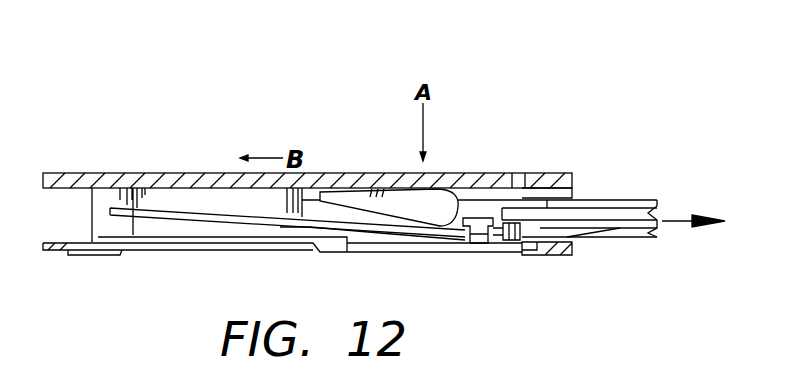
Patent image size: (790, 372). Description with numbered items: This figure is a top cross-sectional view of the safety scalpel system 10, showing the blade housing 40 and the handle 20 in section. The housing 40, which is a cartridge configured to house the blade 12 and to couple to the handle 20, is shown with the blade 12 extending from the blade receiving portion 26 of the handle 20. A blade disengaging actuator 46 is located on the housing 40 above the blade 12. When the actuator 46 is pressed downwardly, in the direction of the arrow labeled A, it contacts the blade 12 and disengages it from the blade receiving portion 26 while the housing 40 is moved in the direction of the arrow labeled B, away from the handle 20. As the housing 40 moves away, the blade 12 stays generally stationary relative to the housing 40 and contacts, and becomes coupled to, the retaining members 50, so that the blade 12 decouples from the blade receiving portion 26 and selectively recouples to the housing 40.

The safety scalpel system 10 is at (309, 72).
The blade 12 is at (188, 216).
The handle 20 is at (618, 140).
The blade receiving portion 26 is at (608, 200).
The housing 40 is at (188, 140).
The blade disengaging actuator 46 is at (420, 173).
The retaining members 50 is at (474, 231).